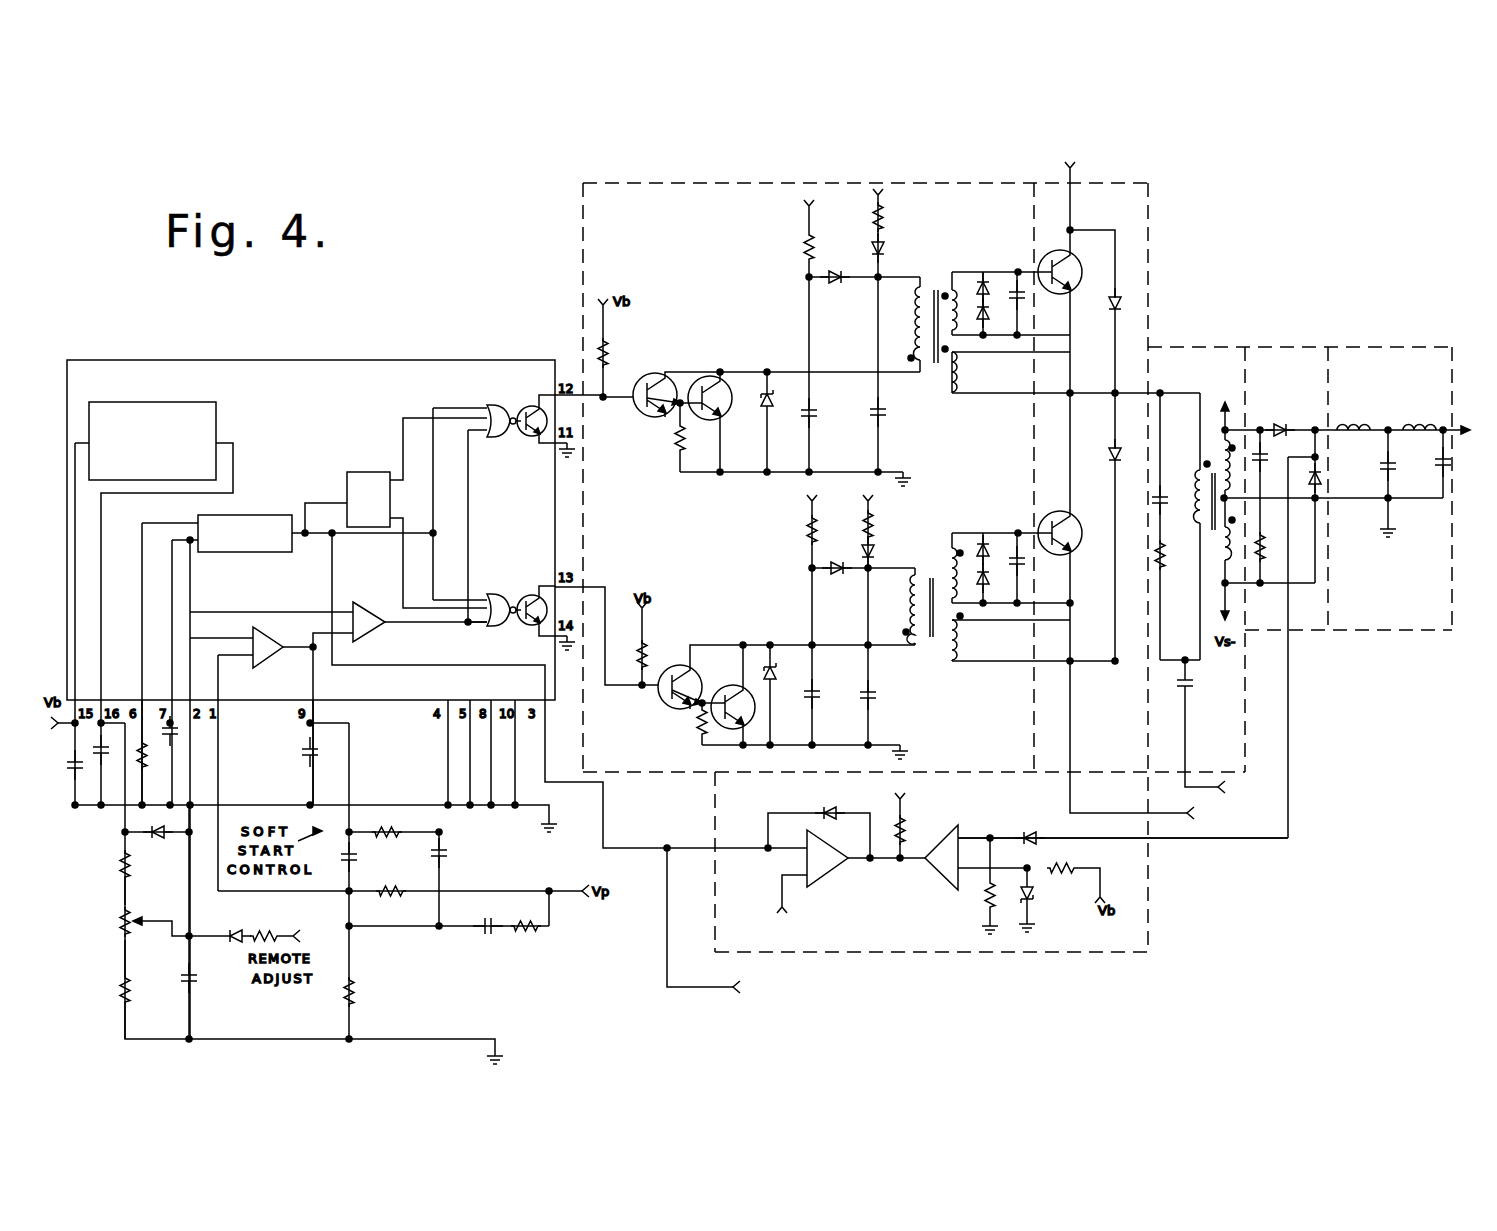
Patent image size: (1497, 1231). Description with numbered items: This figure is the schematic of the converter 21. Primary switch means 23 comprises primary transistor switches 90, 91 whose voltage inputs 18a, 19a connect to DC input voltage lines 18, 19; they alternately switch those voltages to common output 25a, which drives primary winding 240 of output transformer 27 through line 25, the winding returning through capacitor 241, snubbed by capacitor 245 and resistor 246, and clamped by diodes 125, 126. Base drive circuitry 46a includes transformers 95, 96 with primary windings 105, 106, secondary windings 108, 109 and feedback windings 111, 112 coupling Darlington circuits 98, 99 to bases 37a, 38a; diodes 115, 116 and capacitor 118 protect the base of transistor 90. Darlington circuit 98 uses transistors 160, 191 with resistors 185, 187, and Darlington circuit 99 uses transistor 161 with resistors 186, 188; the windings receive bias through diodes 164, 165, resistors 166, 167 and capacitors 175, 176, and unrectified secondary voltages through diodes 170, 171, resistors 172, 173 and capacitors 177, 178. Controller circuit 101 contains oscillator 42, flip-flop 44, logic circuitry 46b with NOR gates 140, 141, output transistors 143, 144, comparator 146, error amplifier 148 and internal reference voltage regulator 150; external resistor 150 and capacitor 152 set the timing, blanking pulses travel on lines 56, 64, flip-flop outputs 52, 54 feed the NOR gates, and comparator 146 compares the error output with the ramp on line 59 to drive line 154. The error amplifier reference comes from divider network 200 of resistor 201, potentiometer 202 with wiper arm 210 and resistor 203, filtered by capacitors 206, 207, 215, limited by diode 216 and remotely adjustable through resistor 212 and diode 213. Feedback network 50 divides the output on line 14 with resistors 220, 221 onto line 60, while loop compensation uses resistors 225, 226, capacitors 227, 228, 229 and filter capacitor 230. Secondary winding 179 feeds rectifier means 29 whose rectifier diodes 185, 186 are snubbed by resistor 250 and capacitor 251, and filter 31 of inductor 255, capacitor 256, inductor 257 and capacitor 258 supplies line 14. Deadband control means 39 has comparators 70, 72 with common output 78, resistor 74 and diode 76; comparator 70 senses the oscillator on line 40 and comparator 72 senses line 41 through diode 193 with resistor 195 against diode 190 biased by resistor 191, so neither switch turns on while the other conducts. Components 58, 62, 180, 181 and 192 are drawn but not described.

The controller circuit 101 is at (337, 359).
The internal reference voltage regulator 150 is at (218, 418).
The oscillator 42 is at (266, 515).
The flip-flop 44 is at (356, 471).
The logic circuitry 46b is at (392, 418).
The base drive circuitry 46a is at (652, 178).
The line 56 is at (305, 498).
The line 64 is at (378, 539).
The complementary output of flip-flop 52 is at (398, 446).
The output of flip-flop 54 is at (400, 571).
The NOR gate 140 is at (501, 438).
The NOR gate 141 is at (497, 596).
The output transistor 143 is at (527, 437).
The output transistor 144 is at (527, 596).
The comparator 146 is at (370, 613).
The line 154 is at (414, 624).
The error amplifier 58 is at (296, 645).
The line 59 is at (303, 612).
The error amplifier 148 is at (230, 628).
The external capacitor 152 is at (178, 731).
The capacitor 230 is at (306, 760).
The capacitor 206 is at (73, 778).
The capacitor 207 is at (103, 762).
The diode 216 is at (162, 837).
The error amplifier input line 62 is at (189, 879).
The resistor 201 is at (120, 872).
The potentiometer 202 is at (120, 921).
The wiper arm 210 is at (168, 920).
The resistive divider reference network 200 is at (112, 945).
The resistor 203 is at (119, 1001).
The diode 213 is at (236, 923).
The resistor 212 is at (275, 923).
The capacitor 215 is at (195, 986).
The resistor 220 is at (360, 997).
The line 60 is at (300, 893).
The resistor 221 is at (410, 886).
The resistor 226 is at (390, 826).
The capacitor 227 is at (358, 857).
The capacitor 228 is at (447, 853).
The capacitor 229 is at (486, 923).
The resistor 225 is at (525, 915).
The feedback network 50 is at (534, 945).
The converter 21 is at (480, 302).
The rectifier diode 185 is at (606, 341).
The Darlington circuit 98 is at (853, 601).
The transistor 160 is at (647, 415).
The Darlington transistor 191 is at (716, 380).
The resistor 187 is at (675, 441).
The zener diode 180 is at (765, 413).
The resistor 166 is at (801, 243).
The resistor 172 is at (869, 223).
The diode 170 is at (886, 246).
The diode 164 is at (838, 268).
The capacitor 175 is at (815, 410).
The capacitor 177 is at (880, 413).
The transformer 95 is at (977, 316).
The primary winding 105 is at (902, 324).
The secondary winding 108 is at (953, 270).
The diode 116 is at (976, 342).
The feedback winding 111 is at (958, 394).
The diode 115 is at (1002, 293).
The capacitor 118 is at (1022, 301).
The base 37a is at (1017, 266).
The primary transistor switch 90 is at (1079, 268).
The DC input voltage line 18 is at (1062, 173).
The voltage input 18a is at (1073, 230).
The diode 125 is at (1115, 308).
The diode 126 is at (1099, 550).
The common output 25a is at (1094, 392).
The primary switch means 23 is at (1160, 277).
The rectifier diode 186 is at (643, 648).
The Darlington circuit 99 is at (711, 683).
The transistor 161 is at (670, 670).
The transistor 192 is at (745, 731).
The resistor 188 is at (694, 731).
The zener diode 181 is at (773, 660).
The capacitor 176 is at (818, 690).
The capacitor 178 is at (876, 700).
The resistor 167 is at (801, 538).
The resistor 173 is at (878, 527).
The diode 171 is at (878, 550).
The diode 165 is at (838, 577).
The transformer 96 is at (973, 572).
The primary winding 106 is at (896, 606).
The secondary winding 109 is at (953, 545).
The feedback winding 112 is at (961, 644).
The base 38a is at (1016, 530).
The primary transistor switch 91 is at (1079, 529).
The voltage input 19a is at (1070, 583).
The DC input voltage line 19 is at (1183, 815).
The output transformer 27 is at (1208, 324).
The rectifier means 29 is at (1336, 332).
The filter 31 is at (1455, 336).
The line 25 is at (1158, 392).
The secondary winding 179 is at (1211, 420).
The primary winding 240 is at (1195, 470).
The capacitor 245 is at (1161, 506).
The resistor 246 is at (1165, 568).
The capacitor 241 is at (1188, 693).
The capacitor 251 is at (1257, 452).
The resistor 250 is at (1263, 570).
The inductor 255 is at (1343, 425).
The inductor 257 is at (1418, 425).
The capacitor 258 is at (1440, 462).
The capacitor 256 is at (1393, 471).
The line 14 is at (1466, 437).
The line 41 is at (1292, 712).
The deadband control means 39 is at (1168, 930).
The line 40 is at (633, 847).
The diode 76 is at (826, 808).
The comparator 70 is at (838, 880).
The resistor 74 is at (906, 836).
The common output 78 is at (912, 861).
The comparator 72 is at (943, 886).
The diode 193 is at (1033, 829).
The resistor 195 is at (982, 906).
The diode 190 is at (1035, 906).